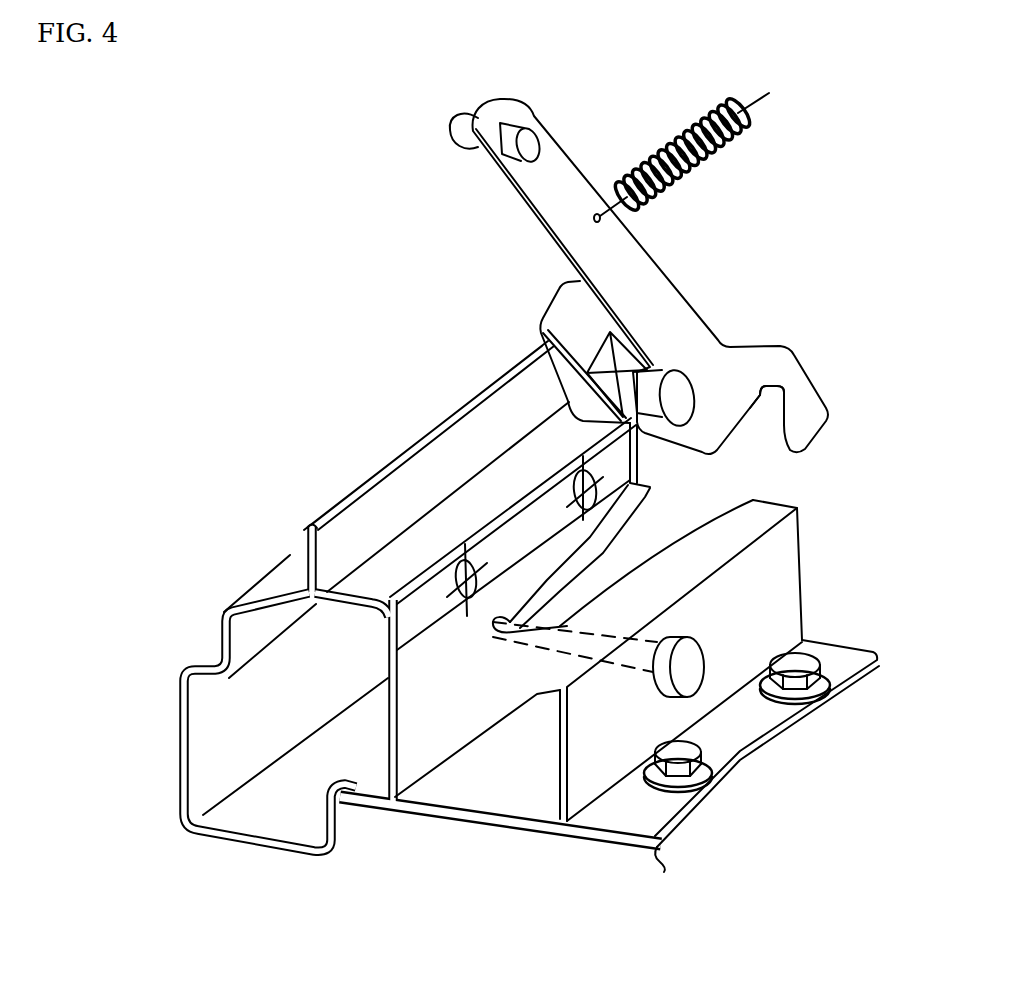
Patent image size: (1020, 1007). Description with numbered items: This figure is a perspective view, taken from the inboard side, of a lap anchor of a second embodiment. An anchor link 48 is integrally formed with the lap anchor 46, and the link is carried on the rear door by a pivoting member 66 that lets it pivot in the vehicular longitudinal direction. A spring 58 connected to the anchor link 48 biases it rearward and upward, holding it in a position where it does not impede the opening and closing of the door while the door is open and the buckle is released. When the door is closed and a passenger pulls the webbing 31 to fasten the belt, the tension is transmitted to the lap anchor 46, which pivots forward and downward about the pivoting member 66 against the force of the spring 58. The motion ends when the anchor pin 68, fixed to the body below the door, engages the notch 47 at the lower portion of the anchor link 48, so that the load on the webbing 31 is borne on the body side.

The webbing 31 is at (566, 318).
The lap anchor 46 is at (651, 422).
The notch 47 is at (768, 400).
The anchor link 48 is at (665, 292).
The spring 58 is at (727, 153).
The pivoting member 66 is at (512, 139).
The anchor pin 68 is at (620, 653).